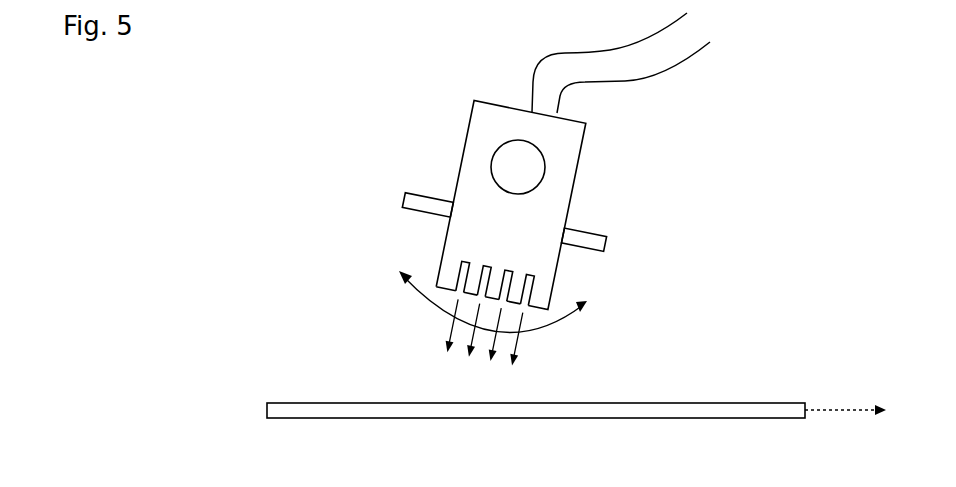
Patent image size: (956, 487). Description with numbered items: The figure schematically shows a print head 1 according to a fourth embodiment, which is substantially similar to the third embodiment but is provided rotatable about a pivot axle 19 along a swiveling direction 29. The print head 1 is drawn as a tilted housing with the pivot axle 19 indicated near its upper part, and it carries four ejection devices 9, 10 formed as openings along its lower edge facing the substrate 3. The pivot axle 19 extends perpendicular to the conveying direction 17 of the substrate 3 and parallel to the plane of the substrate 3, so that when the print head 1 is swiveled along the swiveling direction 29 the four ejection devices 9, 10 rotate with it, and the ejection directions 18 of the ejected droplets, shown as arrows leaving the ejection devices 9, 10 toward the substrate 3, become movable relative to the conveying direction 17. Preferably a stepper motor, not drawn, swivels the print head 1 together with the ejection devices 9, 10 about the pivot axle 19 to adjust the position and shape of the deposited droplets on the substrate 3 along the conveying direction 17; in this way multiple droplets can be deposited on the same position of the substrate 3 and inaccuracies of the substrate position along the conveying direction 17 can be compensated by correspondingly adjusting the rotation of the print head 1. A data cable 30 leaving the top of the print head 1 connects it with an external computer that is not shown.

The print head 1 is at (565, 128).
The substrate 3 is at (690, 407).
The ejection devices 9 is at (605, 279).
The nozzle opening 10 is at (467, 263).
The conveying direction 17 is at (832, 405).
The ejection directions 18 is at (514, 354).
The pivot axle 19 is at (530, 169).
The swiveling direction 29 is at (437, 307).
The data cable 30 is at (677, 53).